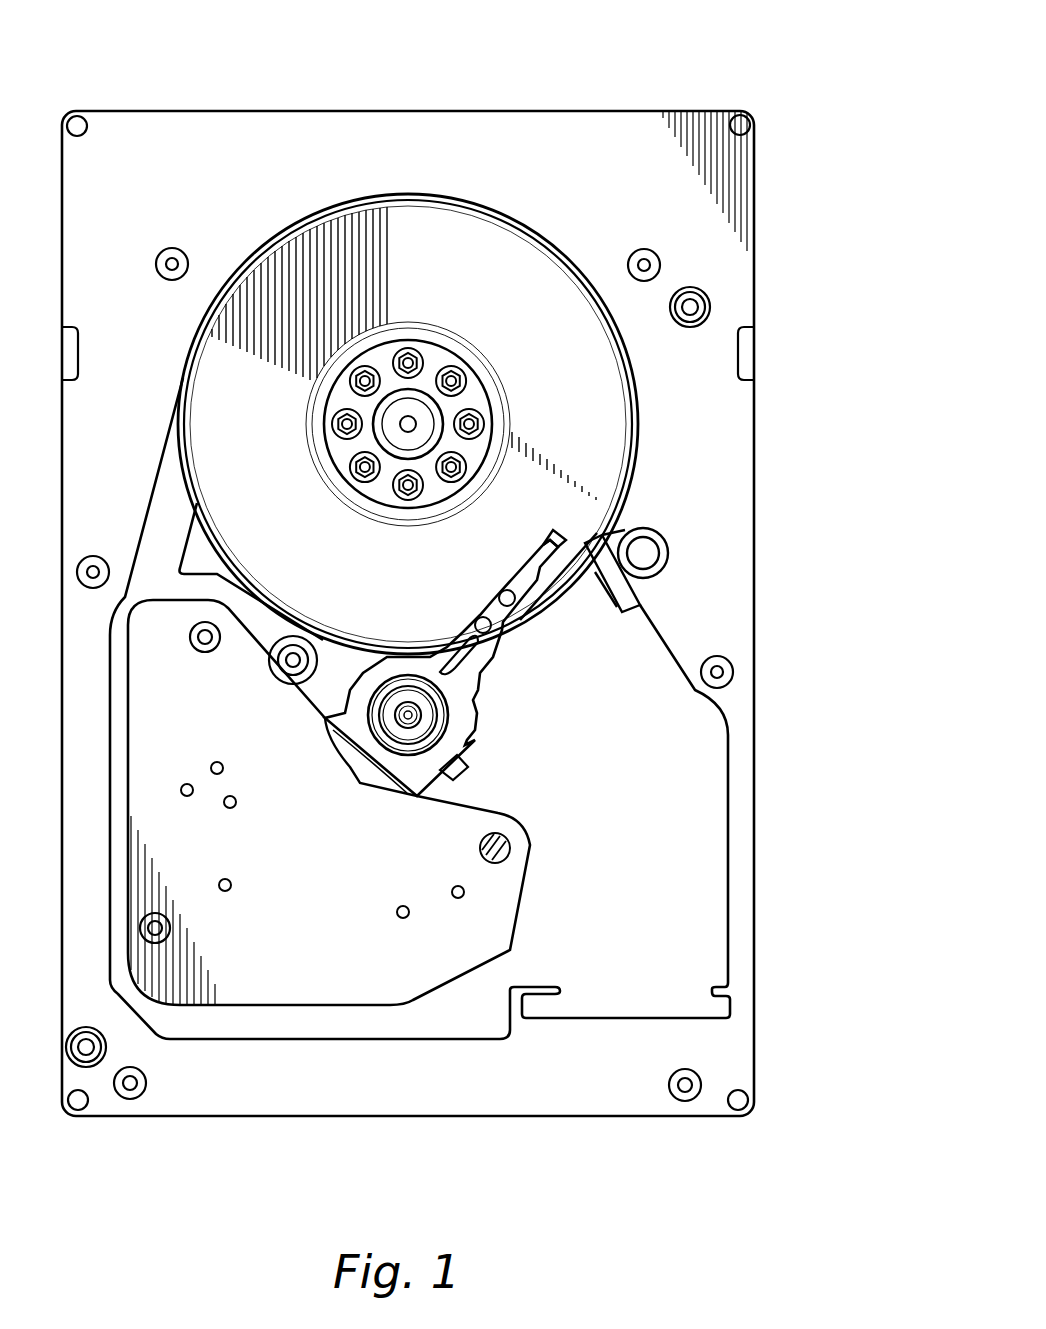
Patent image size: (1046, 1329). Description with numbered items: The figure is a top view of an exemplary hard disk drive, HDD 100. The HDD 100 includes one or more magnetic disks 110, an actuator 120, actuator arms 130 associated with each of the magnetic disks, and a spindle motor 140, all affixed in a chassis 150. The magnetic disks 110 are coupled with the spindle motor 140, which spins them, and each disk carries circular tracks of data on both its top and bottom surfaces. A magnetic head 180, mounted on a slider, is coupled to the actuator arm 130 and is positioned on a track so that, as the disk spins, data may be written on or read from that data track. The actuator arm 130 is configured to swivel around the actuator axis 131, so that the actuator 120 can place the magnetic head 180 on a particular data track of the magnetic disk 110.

The HDD 100 is at (655, 40).
The chassis 150 is at (175, 110).
The magnetic disk 110 is at (493, 248).
The spindle motor 140 is at (412, 424).
The actuator arm 130 is at (492, 605).
The magnetic head 180 is at (553, 537).
The actuator axis 131 is at (412, 717).
The actuator 120 is at (508, 903).